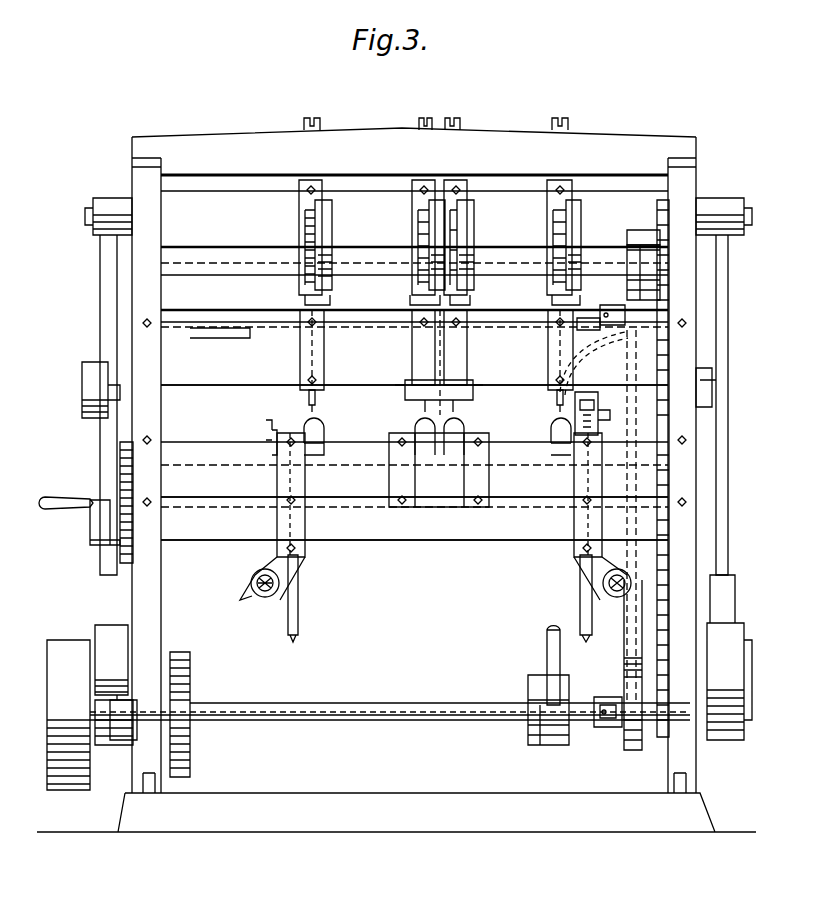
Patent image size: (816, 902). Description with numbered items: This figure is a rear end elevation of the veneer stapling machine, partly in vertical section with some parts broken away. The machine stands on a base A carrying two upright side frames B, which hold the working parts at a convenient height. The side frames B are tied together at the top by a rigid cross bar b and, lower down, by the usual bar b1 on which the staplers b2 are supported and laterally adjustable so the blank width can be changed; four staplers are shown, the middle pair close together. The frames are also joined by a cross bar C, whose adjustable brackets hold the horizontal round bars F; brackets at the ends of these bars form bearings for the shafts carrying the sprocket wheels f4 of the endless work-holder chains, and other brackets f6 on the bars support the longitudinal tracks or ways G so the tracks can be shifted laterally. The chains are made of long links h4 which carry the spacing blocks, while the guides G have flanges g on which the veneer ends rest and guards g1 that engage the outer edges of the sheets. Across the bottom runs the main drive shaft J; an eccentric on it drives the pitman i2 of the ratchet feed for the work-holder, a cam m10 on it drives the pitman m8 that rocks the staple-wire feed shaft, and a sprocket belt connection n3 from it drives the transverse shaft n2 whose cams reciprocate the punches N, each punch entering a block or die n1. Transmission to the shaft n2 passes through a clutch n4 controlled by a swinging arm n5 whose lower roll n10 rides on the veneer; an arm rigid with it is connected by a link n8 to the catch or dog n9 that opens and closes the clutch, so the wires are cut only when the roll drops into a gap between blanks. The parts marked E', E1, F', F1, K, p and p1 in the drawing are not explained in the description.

The base A is at (449, 797).
The side frames B is at (155, 625).
The rigid cross bar b is at (226, 142).
The brackets K is at (450, 122).
The shaft n2 is at (345, 260).
The punches N is at (304, 298).
The staplers b2 is at (326, 356).
The bar b1 is at (245, 330).
The rail E' is at (390, 459).
The rail E1 is at (390, 459).
The block or die n1 is at (326, 428).
The longitudinal tracks or ways G is at (276, 430).
The long links h4 is at (254, 443).
The clutch n4 is at (648, 236).
The brackets f6 is at (253, 553).
The sprocket wheels f4 is at (300, 606).
The round bars F is at (247, 605).
The cross rail F' is at (414, 513).
The cross rail F1 is at (414, 513).
The cross bar C is at (521, 536).
The flanges g is at (100, 432).
The rack p is at (134, 458).
The handle p1 is at (120, 548).
The guards g1 is at (110, 645).
The main drive shaft J is at (424, 704).
The pitman i2 is at (545, 654).
The pitman m8 is at (643, 525).
The cam m10 is at (634, 752).
The sprocket belt connection n3 is at (670, 640).
The swinging arm n5 is at (594, 363).
The link n8 is at (625, 332).
The catch or dog n9 is at (626, 293).
The roll n10 is at (600, 340).